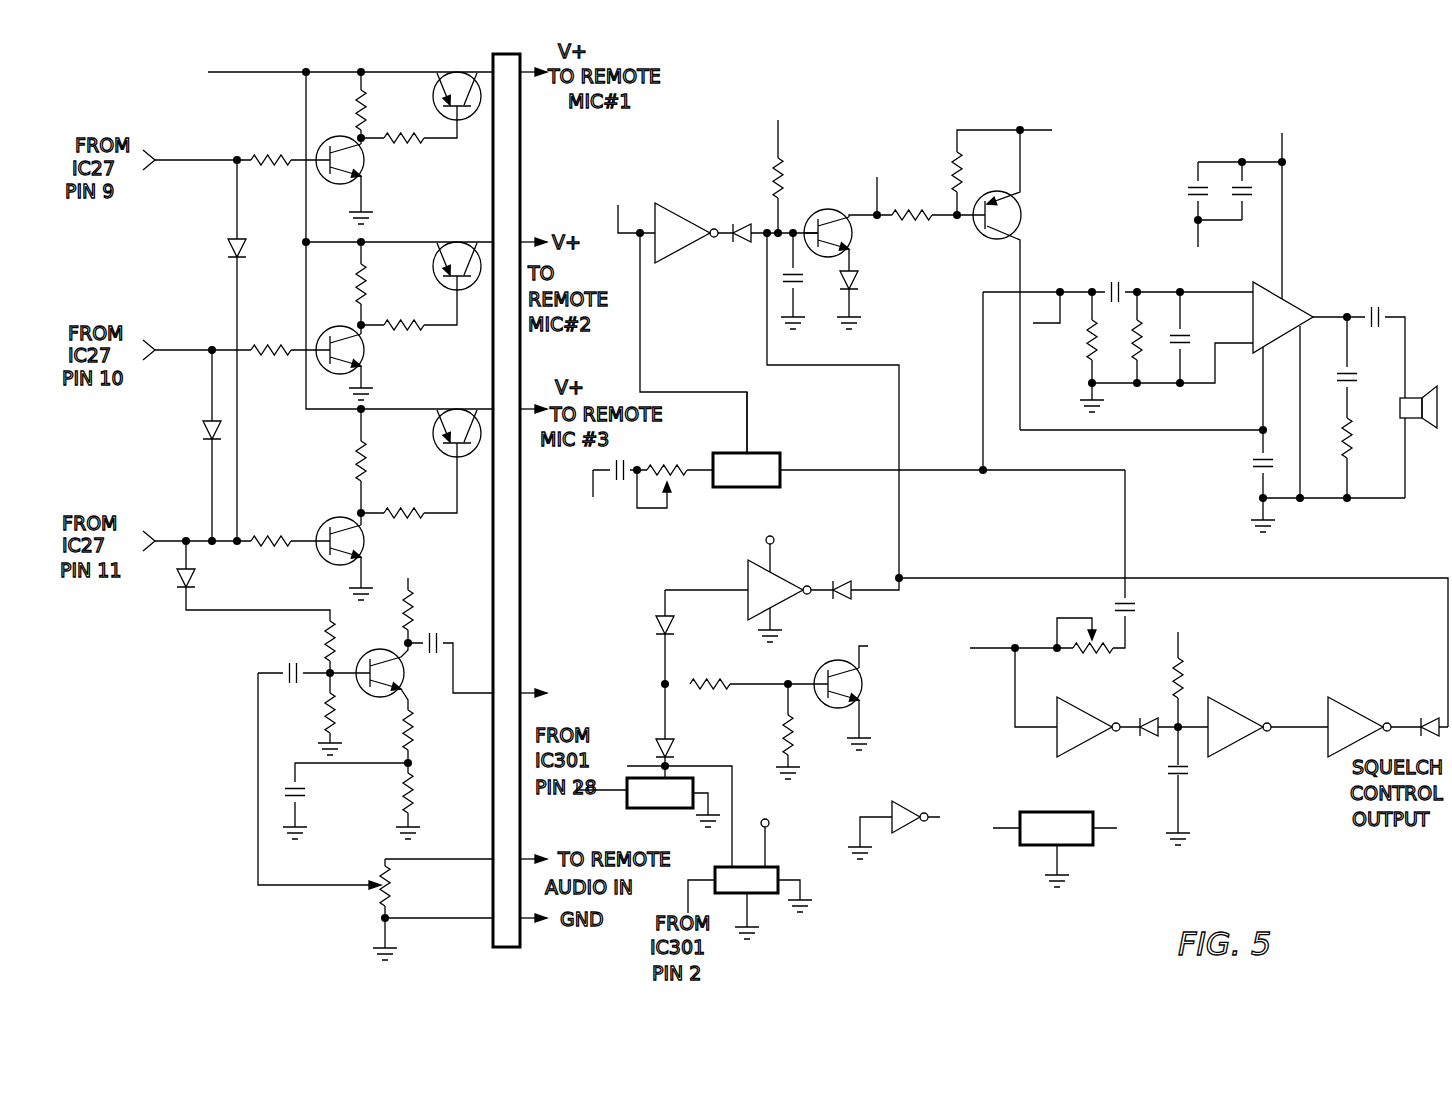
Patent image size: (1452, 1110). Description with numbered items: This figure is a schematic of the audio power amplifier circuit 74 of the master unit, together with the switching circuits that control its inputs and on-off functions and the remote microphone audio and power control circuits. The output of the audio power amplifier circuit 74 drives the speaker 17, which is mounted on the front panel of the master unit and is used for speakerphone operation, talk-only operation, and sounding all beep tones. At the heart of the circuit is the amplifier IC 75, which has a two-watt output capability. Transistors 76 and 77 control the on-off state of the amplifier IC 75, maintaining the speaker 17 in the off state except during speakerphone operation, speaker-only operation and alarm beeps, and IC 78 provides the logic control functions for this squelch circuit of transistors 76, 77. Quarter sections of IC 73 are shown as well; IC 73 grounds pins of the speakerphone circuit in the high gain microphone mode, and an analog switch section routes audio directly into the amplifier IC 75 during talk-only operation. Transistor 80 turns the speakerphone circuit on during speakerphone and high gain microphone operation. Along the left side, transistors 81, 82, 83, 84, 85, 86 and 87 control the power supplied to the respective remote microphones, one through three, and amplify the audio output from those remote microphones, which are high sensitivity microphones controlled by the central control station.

The speaker 17 is at (1432, 430).
The IC 73 is at (777, 893).
The audio power amplifier circuit 74 is at (1194, 332).
The amplifier IC 75 is at (1297, 308).
The transistor 76 is at (853, 240).
The transistor 77 is at (1020, 205).
The IC 78 is at (694, 213).
The transistor 80 is at (862, 672).
The transistor 81 is at (440, 78).
The transistor 82 is at (364, 165).
The transistor 83 is at (460, 243).
The transistor 84 is at (364, 355).
The transistor 85 is at (462, 410).
The transistor 86 is at (364, 546).
The transistor 87 is at (396, 690).